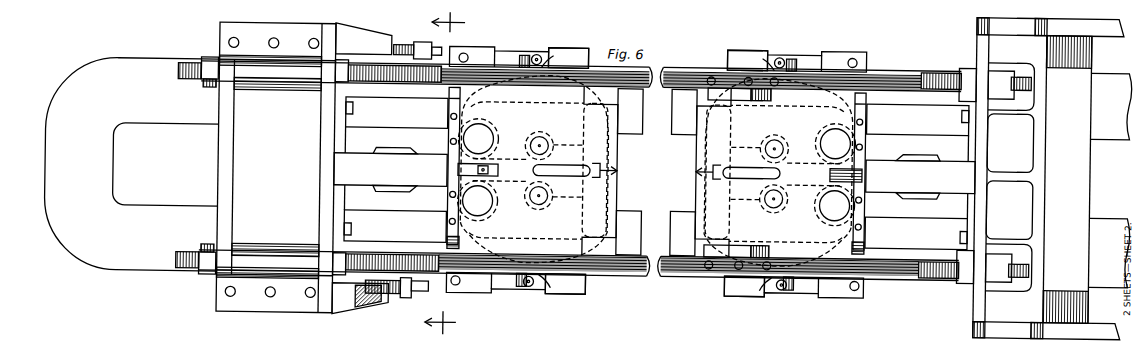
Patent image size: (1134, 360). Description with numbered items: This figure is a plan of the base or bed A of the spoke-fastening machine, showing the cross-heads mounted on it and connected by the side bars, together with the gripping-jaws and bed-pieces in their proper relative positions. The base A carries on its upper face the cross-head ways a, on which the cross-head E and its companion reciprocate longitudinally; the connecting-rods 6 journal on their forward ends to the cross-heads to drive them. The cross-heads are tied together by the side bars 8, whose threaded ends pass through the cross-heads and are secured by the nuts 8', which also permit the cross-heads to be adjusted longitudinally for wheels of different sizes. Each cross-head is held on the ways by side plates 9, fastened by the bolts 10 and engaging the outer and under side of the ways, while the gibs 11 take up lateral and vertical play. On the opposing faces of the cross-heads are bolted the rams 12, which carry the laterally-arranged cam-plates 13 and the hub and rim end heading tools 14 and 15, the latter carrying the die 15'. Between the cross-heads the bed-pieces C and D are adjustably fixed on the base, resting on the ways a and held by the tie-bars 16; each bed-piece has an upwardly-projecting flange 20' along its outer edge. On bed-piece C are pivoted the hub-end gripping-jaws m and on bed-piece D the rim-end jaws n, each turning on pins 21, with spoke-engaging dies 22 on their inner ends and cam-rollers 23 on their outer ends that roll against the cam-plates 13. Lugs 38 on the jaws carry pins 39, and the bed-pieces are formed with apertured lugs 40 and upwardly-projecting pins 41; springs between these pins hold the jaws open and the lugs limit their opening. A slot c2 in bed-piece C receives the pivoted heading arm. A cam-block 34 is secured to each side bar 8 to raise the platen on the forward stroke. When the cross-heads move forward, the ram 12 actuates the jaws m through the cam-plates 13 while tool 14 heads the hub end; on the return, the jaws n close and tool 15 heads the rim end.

The base or bed A is at (160, 172).
The cross-head E is at (290, 168).
The connecting-rods 6 is at (1048, 180).
The side bars 8 is at (603, 175).
The nuts 8' is at (599, 174).
The side plates 9 is at (356, 39).
The bolts 10 is at (309, 41).
The gibs 11 is at (406, 50).
The rams 12 is at (654, 173).
The cam-plates 13 is at (390, 151).
The hub-end heading tool 14 is at (830, 172).
The rim-end heading tool 15 is at (478, 170).
The die 15' is at (656, 172).
The tie-bars 16 is at (454, 173).
The upwardly-projecting flange 20' is at (655, 172).
The pins 21 is at (539, 137).
The spoke-engaging dies 22 is at (606, 171).
The cam-rollers 23 is at (448, 146).
The cam-block 34 is at (712, 95).
The laterally-projecting lugs 38 is at (548, 60).
The pins 39 is at (535, 55).
The apertured lugs 40 is at (522, 56).
The upwardly-projecting pins 41 is at (462, 54).
The bed-piece D is at (545, 164).
The bed-piece C is at (768, 169).
The cross-head ways a is at (645, 177).
The rim-end spoke-gripping jaws n is at (488, 169).
The hub-end spoke-gripping jaws m is at (821, 176).
The slot c2 is at (759, 175).